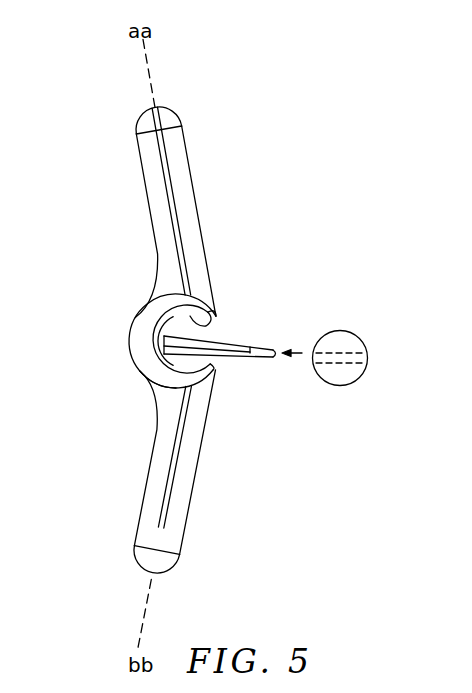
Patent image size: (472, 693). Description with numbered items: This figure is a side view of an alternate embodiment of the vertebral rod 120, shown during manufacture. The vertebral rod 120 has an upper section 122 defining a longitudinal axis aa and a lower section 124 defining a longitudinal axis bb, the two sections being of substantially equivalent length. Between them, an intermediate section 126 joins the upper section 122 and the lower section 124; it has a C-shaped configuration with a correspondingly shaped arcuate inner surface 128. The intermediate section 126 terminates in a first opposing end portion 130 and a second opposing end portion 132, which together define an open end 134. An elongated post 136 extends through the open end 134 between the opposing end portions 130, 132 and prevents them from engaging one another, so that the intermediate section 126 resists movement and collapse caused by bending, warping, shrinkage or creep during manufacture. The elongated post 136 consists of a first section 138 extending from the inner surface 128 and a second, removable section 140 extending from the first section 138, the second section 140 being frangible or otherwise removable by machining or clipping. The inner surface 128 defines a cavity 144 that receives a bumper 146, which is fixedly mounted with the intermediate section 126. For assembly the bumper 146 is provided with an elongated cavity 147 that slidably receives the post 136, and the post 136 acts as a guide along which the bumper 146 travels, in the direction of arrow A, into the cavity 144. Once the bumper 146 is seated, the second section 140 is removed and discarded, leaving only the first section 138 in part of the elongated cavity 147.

The vertebral rod 120 is at (281, 200).
The upper section 122 is at (160, 173).
The lower section 124 is at (158, 503).
The intermediate section 126 is at (143, 329).
The arcuate inner surface 128 is at (205, 301).
The first opposing end portion 130 is at (220, 323).
The second opposing end portion 132 is at (214, 357).
The open end 134 is at (231, 356).
The elongated post 136 is at (267, 332).
The first section 138 is at (136, 349).
The second section 140 is at (250, 355).
The cavity 144 is at (147, 381).
The bumper 146 is at (360, 337).
The elongated cavity 147 is at (365, 382).